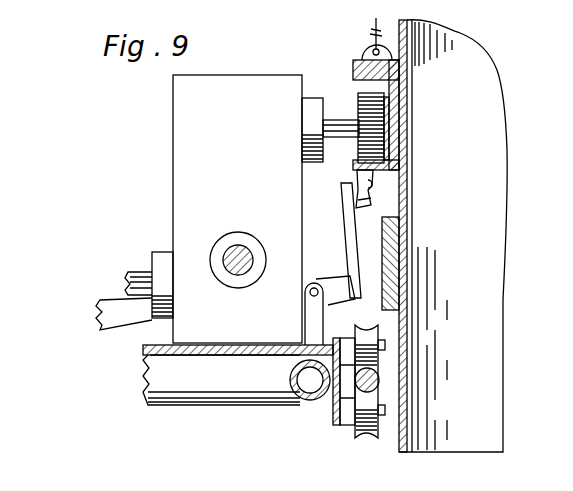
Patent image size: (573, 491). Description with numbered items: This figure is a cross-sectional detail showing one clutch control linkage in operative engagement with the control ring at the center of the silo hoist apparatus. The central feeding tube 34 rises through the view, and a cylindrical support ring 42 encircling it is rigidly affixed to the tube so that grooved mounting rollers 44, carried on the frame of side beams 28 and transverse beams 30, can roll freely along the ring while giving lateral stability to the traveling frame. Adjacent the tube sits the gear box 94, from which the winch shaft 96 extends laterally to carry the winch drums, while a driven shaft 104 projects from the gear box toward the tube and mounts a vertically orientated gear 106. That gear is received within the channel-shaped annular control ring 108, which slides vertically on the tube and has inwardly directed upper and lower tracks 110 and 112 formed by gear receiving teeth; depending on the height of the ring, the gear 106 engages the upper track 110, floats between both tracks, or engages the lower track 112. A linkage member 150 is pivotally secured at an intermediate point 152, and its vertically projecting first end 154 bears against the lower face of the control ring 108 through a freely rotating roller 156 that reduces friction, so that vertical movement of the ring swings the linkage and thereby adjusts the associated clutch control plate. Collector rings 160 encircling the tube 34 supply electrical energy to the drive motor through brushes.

The side beams 28 is at (191, 384).
The transverse beams 30 is at (298, 398).
The central feeding tube 34 is at (399, 435).
The support ring 42 is at (372, 382).
The mounting rollers 44 is at (384, 345).
The gear box 94 is at (177, 146).
The winch shaft 96 is at (237, 256).
The driven shaft 104 is at (332, 130).
The gear 106 is at (377, 127).
The control ring 108 is at (404, 81).
The upper track 110 is at (358, 71).
The lower track 112 is at (391, 165).
The linkage member 150 is at (100, 290).
The pivot point 152 is at (309, 294).
The first end of linkage member 154 is at (349, 254).
The roller 156 is at (368, 200).
The collector rings 160 is at (395, 241).